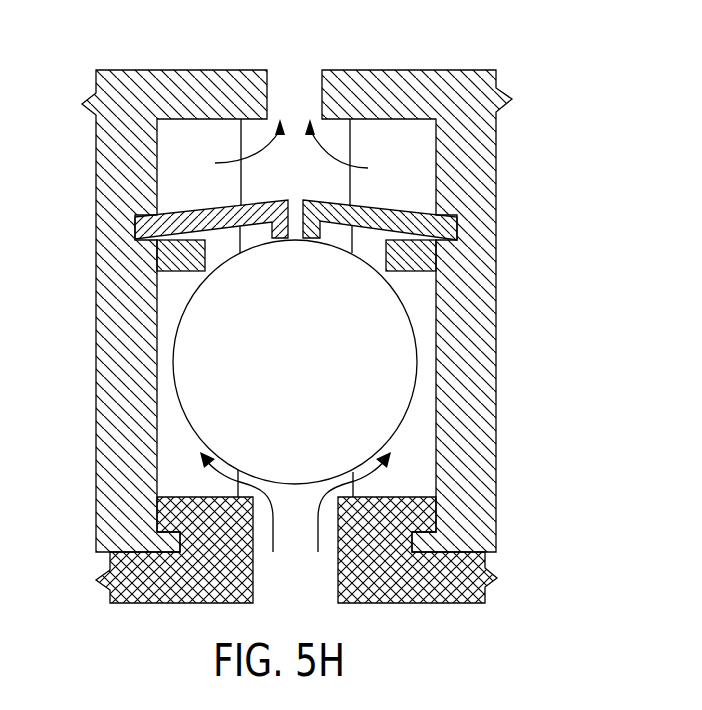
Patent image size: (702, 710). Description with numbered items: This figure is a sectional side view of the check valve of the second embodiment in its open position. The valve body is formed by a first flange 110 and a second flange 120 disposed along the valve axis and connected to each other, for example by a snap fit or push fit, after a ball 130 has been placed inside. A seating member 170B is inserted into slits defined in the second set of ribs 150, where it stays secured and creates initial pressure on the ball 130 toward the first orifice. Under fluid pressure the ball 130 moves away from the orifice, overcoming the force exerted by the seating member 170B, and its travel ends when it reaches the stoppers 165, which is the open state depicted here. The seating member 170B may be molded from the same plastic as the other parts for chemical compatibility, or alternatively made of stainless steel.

The first flange 110 is at (125, 593).
The second flange 120 is at (487, 88).
The ball 130 is at (390, 367).
The second set of ribs 150 is at (108, 212).
The stoppers 165 is at (190, 255).
The seating member 170B is at (418, 230).